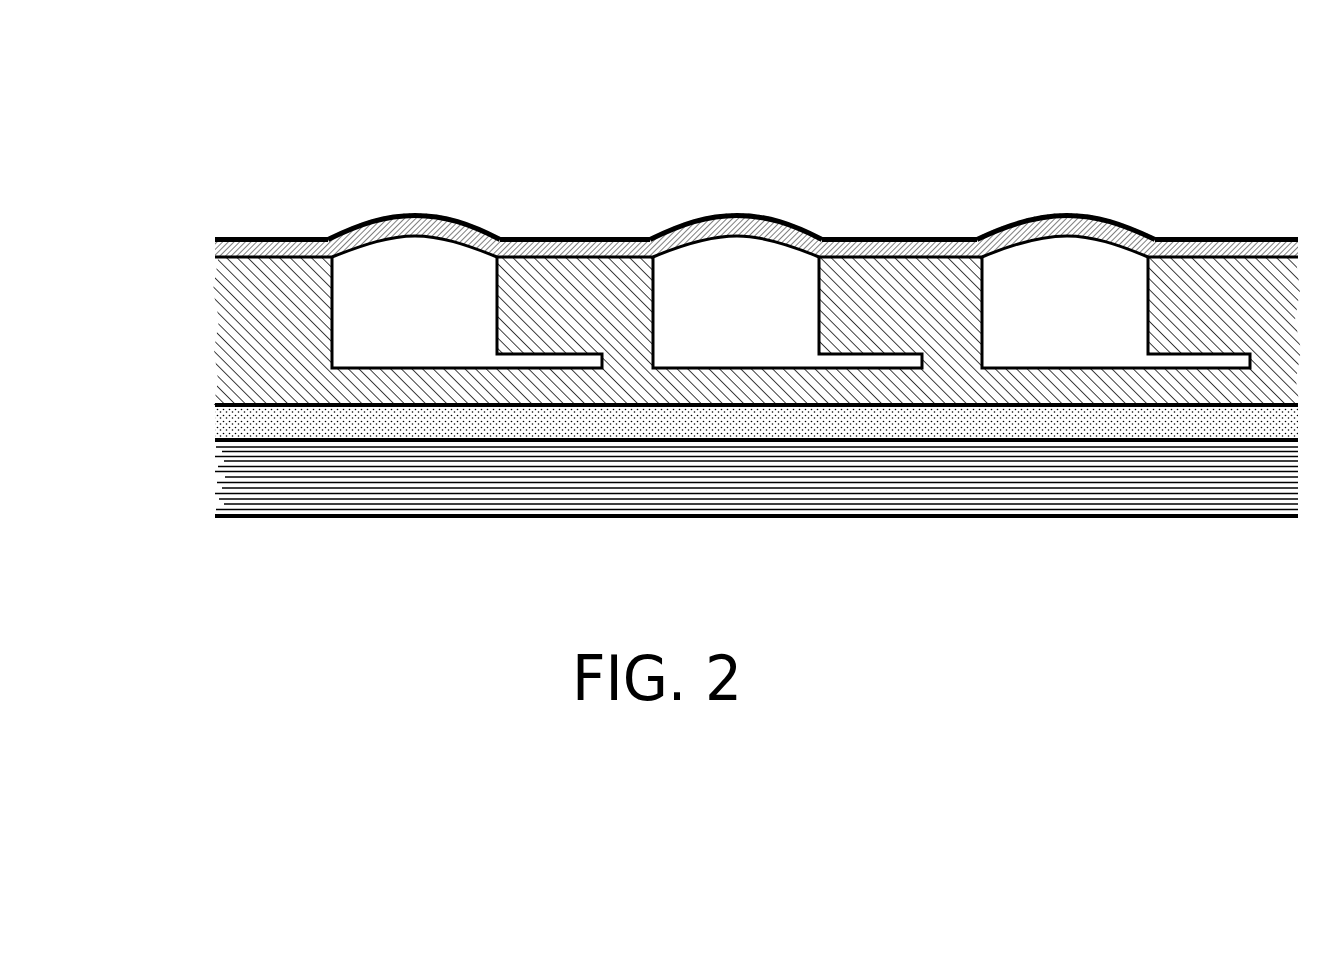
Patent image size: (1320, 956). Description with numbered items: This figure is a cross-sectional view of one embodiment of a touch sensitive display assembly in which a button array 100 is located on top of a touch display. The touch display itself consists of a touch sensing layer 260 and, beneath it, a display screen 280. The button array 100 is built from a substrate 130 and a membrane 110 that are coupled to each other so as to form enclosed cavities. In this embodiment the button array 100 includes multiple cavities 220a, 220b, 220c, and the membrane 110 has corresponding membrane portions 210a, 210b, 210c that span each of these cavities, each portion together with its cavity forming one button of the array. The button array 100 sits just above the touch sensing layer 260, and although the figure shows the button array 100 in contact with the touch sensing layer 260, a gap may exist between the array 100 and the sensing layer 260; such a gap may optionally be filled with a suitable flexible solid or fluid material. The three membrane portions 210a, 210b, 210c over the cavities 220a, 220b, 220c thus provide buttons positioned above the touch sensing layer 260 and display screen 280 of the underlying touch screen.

The button array 100 is at (200, 236).
The membrane 110 is at (580, 238).
The substrate 130 is at (907, 238).
The membrane portion 210a is at (413, 212).
The membrane portion 210b is at (738, 213).
The membrane portion 210c is at (1063, 213).
The cavity 220a is at (415, 368).
The cavity 220b is at (737, 368).
The cavity 220c is at (1067, 368).
The touch sensing layer 260 is at (200, 407).
The display screen 280 is at (200, 442).